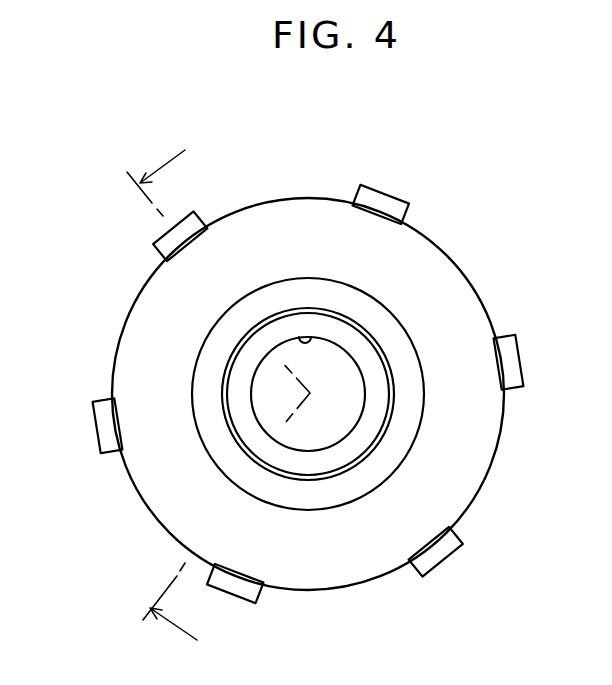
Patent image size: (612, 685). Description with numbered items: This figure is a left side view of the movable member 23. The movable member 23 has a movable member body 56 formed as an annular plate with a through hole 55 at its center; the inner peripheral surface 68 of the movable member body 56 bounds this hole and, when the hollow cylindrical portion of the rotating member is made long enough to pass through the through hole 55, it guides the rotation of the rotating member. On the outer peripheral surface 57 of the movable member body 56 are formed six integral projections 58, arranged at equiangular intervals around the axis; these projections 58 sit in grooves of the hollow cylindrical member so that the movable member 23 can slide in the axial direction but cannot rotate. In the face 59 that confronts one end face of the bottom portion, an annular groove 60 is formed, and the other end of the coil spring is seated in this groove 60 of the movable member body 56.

The movable member 23 is at (474, 244).
The through hole 55 is at (317, 437).
The movable member body 56 is at (470, 460).
The outer peripheral surface 57 is at (115, 350).
The projections 58 is at (378, 197).
The face 59 is at (177, 497).
The annular groove 60 is at (402, 352).
The inner peripheral surface 68 is at (315, 337).